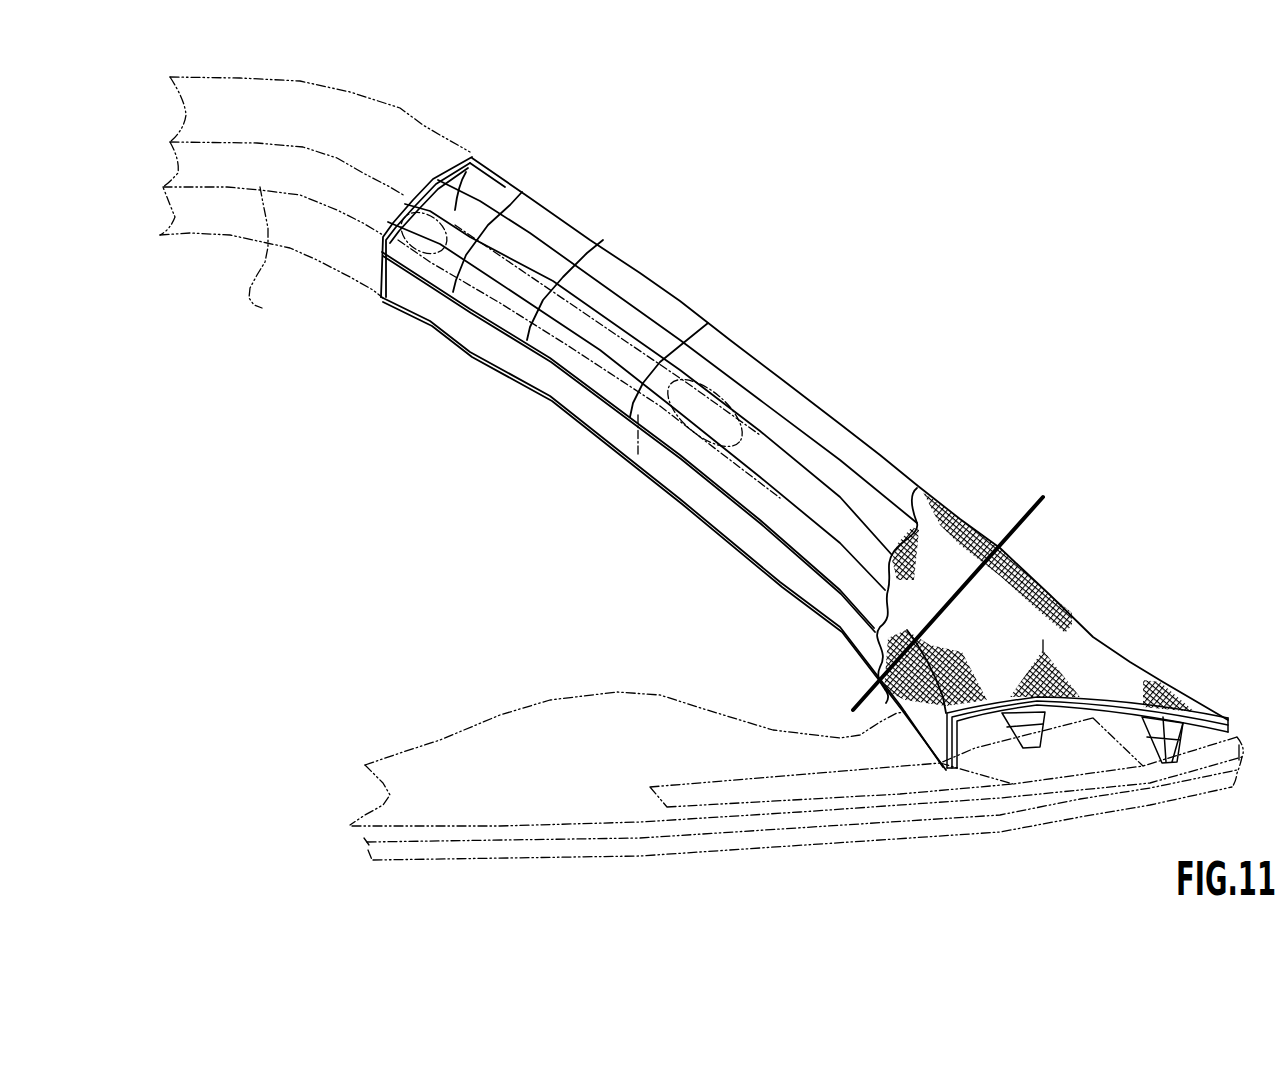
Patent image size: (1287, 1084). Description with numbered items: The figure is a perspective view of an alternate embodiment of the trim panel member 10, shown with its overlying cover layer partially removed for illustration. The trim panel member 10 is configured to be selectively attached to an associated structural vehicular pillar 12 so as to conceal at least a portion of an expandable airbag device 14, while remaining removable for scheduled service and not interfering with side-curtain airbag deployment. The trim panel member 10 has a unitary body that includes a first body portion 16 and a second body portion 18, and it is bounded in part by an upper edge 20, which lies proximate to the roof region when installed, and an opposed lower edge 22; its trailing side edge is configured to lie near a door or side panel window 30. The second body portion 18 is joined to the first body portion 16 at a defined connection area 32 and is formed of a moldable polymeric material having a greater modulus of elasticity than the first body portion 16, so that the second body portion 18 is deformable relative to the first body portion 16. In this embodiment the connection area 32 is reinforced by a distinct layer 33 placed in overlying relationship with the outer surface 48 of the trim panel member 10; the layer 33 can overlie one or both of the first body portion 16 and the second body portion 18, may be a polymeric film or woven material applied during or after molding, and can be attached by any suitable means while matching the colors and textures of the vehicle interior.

The trim panel member 10 is at (1016, 495).
The pillar 12 is at (397, 104).
The expandable airbag device 14 is at (262, 308).
The first body portion 16 is at (746, 358).
The second body portion 18 is at (437, 320).
The upper edge 20 is at (438, 178).
The lower edge 22 is at (1086, 707).
The window 30 is at (570, 576).
The connection area 32 is at (767, 532).
The layer 33 is at (1158, 688).
The outer surface 48 is at (860, 455).